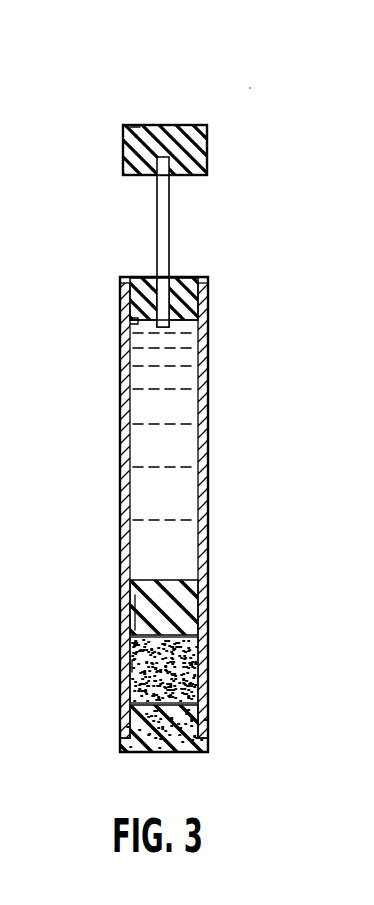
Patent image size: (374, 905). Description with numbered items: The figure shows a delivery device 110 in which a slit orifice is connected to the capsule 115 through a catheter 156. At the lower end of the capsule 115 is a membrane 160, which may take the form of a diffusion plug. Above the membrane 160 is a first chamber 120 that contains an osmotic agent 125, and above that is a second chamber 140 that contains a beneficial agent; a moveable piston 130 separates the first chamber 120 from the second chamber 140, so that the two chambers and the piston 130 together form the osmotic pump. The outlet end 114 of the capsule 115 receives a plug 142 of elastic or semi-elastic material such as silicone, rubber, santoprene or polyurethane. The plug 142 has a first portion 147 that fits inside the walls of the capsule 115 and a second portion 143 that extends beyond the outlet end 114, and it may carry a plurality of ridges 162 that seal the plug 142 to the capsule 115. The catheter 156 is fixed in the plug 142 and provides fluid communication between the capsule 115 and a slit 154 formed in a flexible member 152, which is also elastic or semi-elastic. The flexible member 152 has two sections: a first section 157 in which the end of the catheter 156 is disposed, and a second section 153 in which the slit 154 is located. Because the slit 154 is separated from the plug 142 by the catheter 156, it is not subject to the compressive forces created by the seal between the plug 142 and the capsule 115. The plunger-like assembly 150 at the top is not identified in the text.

The delivery device 110 is at (262, 80).
The outlet end 114 is at (121, 279).
The capsule 115 is at (222, 528).
The first chamber 120 is at (203, 676).
The osmotic agent 125 is at (134, 668).
The moveable piston 130 is at (190, 612).
The second chamber 140 is at (219, 422).
The plug 142 is at (186, 278).
The second portion 143 is at (224, 280).
The first portion 147 is at (131, 320).
The plunger assembly 150 is at (165, 112).
The flexible member 152 is at (225, 150).
The second section 153 is at (123, 138).
The slit 154 is at (136, 126).
The catheter 156 is at (170, 230).
The first section 157 is at (123, 165).
The membrane 160 is at (196, 721).
The ridges 162 is at (192, 330).